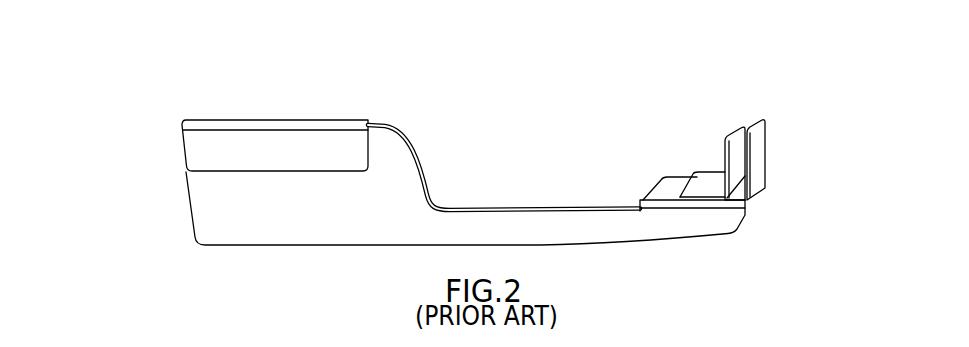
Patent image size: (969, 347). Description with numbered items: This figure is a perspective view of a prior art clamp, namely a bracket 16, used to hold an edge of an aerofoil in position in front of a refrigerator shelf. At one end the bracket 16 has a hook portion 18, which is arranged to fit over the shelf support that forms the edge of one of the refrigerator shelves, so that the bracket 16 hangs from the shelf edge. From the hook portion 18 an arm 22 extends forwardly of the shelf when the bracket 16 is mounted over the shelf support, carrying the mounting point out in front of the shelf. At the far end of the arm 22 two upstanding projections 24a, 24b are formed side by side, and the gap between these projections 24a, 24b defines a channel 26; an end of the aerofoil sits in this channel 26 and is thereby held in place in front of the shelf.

The bracket 16 is at (148, 182).
The hook portion 18 is at (318, 152).
The arm 22 is at (475, 228).
The projection 24a is at (732, 133).
The projection 24b is at (755, 150).
The channel 26 is at (729, 136).